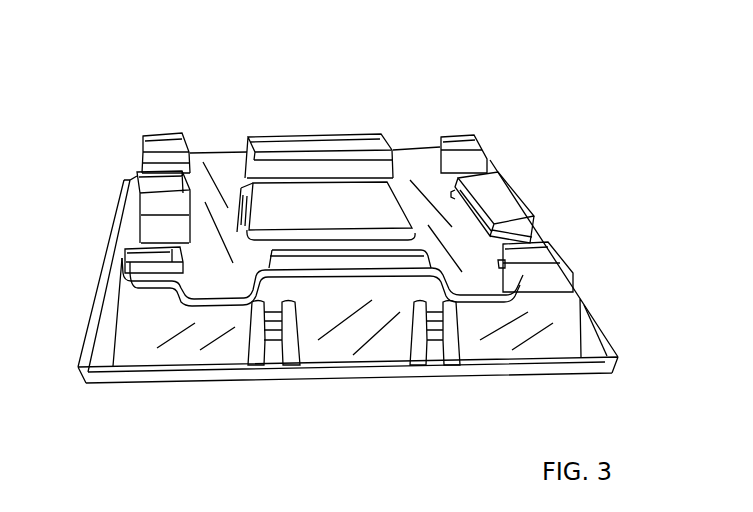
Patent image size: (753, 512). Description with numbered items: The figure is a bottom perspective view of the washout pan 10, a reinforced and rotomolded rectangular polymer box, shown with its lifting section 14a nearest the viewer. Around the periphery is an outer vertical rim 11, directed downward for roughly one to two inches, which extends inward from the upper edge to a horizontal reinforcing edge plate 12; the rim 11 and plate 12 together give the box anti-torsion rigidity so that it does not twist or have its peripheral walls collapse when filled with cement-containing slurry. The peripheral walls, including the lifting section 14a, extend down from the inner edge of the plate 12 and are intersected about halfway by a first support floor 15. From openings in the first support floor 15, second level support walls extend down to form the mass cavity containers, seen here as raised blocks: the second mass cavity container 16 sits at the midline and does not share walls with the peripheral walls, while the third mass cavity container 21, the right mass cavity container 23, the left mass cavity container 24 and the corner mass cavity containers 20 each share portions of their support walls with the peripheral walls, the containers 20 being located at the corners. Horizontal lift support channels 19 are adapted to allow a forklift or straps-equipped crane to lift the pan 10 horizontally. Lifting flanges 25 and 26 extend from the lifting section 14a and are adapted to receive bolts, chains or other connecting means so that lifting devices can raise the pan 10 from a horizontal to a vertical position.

The washout pan 10 is at (615, 313).
The outer vertical rim 11 is at (590, 313).
The horizontal reinforcing edge plate 12 is at (597, 353).
The lifting section 14a is at (195, 328).
The first support floor 15 is at (412, 167).
The second mass cavity container 16 is at (283, 217).
The lift support channel 19 is at (205, 147).
The corner mass cavity container 20 is at (163, 140).
The third mass cavity container 21 is at (322, 147).
The right mass cavity container 23 is at (513, 205).
The left mass cavity container 24 is at (157, 193).
The lifting flange 25 is at (435, 338).
The lifting flange 26 is at (262, 345).